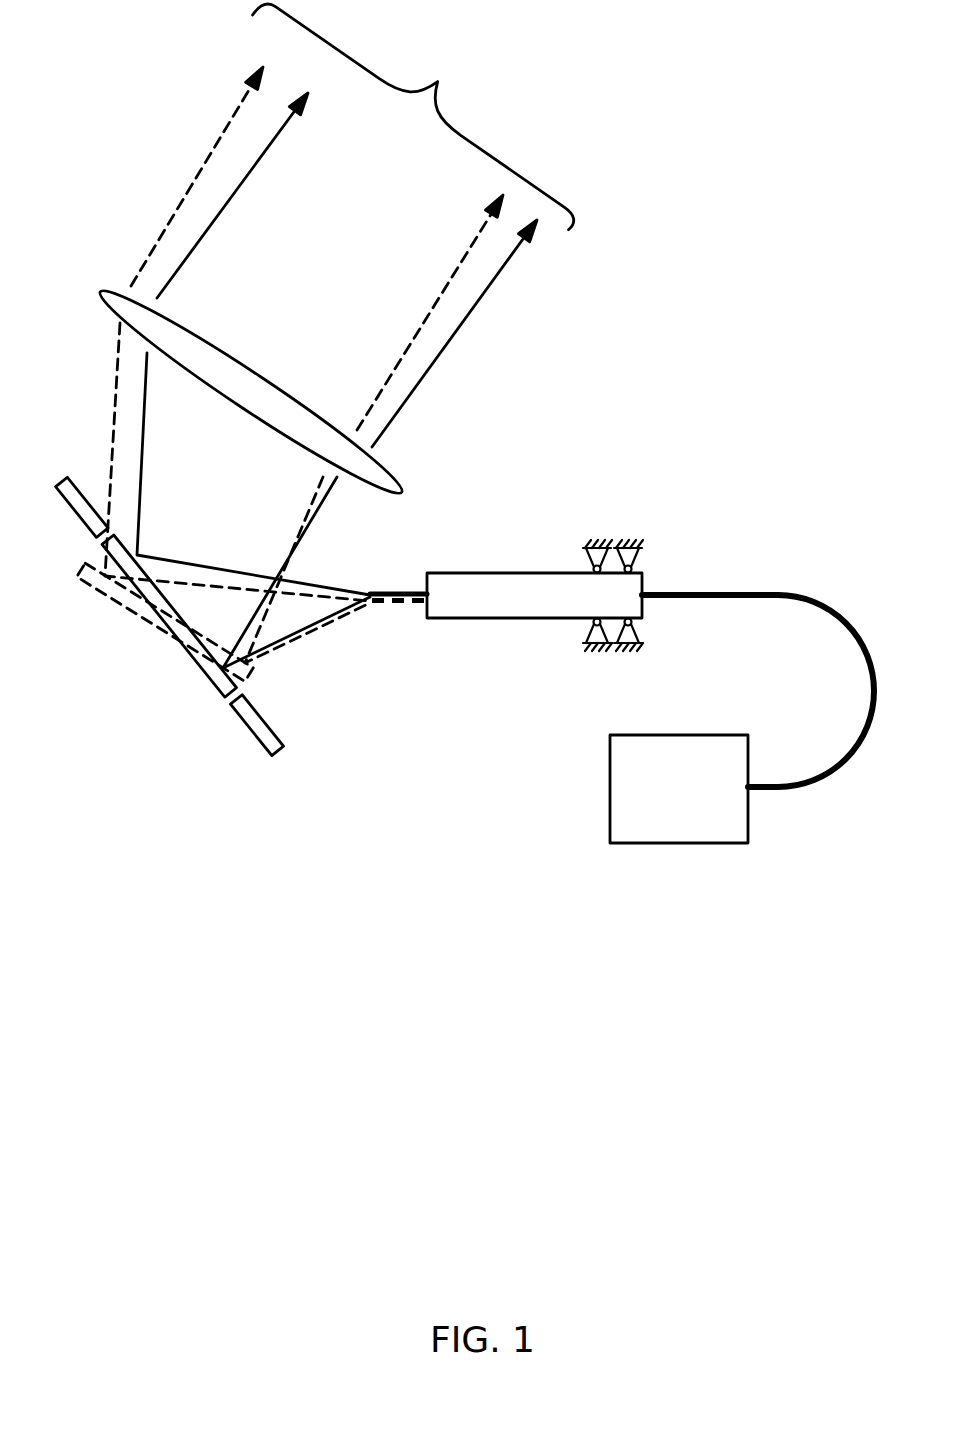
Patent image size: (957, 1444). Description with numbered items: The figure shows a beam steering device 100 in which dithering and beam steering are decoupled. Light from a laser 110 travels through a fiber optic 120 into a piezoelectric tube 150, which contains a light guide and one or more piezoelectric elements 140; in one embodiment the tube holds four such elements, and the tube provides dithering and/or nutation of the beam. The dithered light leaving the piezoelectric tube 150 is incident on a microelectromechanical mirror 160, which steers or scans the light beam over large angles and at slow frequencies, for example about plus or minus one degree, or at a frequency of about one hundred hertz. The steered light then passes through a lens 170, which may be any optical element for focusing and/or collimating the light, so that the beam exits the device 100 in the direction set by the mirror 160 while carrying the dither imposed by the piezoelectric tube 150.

The beam steering device 100 is at (478, 928).
The laser 110 is at (643, 822).
The fiber optic 120 is at (795, 592).
The piezoelectric elements 140 is at (588, 550).
The piezoelectric tube 150 is at (453, 608).
The microelectromechanical mirror 160 is at (262, 740).
The lens 170 is at (112, 297).